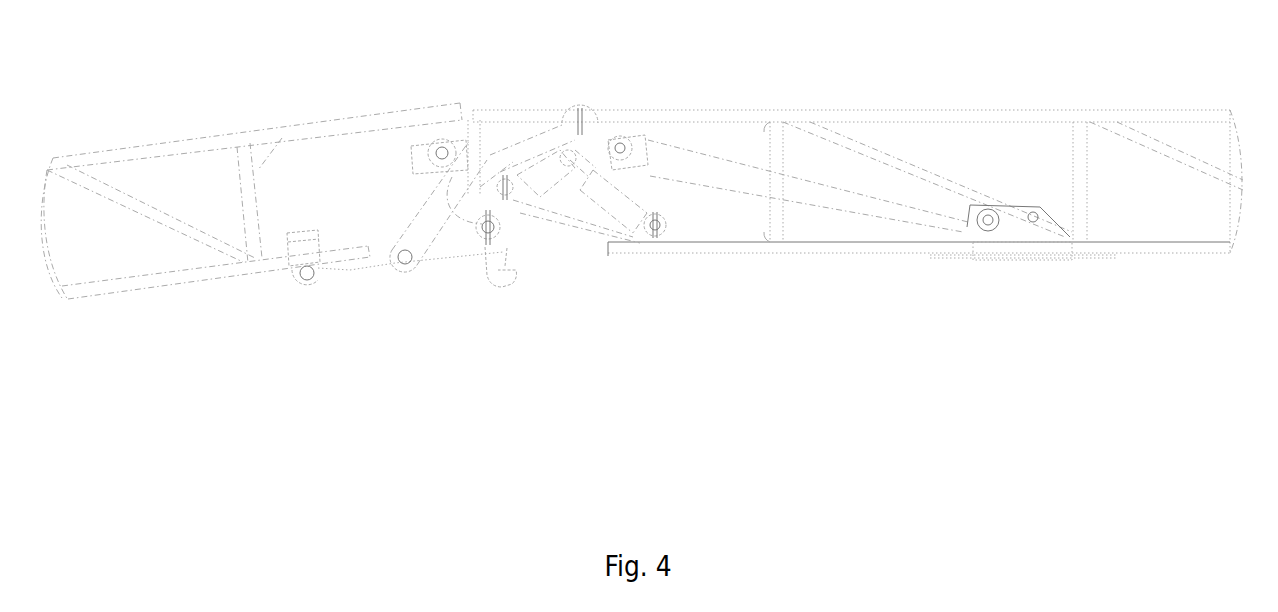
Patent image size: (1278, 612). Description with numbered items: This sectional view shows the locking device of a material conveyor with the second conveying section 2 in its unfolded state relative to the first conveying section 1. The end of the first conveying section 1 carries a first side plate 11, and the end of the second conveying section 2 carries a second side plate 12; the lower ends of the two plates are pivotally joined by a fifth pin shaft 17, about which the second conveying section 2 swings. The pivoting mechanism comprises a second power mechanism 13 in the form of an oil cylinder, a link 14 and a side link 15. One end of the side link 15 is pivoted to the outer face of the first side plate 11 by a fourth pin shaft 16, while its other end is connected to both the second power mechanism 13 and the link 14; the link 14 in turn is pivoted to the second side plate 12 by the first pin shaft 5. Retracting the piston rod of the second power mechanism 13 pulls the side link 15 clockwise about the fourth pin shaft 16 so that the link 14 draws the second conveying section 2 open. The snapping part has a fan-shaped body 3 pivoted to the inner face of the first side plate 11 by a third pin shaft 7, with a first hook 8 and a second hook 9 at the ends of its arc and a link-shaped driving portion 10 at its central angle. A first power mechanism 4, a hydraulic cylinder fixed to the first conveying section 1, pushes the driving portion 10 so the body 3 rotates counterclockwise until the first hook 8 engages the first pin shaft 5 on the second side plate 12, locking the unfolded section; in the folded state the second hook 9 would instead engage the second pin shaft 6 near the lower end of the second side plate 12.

The first conveying section 1 is at (805, 115).
The second conveying section 2 is at (200, 142).
The body 3 is at (452, 178).
The first power mechanism 4 is at (663, 233).
The first pin shaft 5 is at (436, 144).
The second pin shaft 6 is at (300, 280).
The third pin shaft 7 is at (550, 198).
The first hook 8 is at (472, 125).
The second hook 9 is at (504, 270).
The driving portion 10 is at (553, 200).
The first side plate 11 is at (640, 142).
The second side plate 12 is at (330, 190).
The second power mechanism 13 is at (873, 210).
The link 14 is at (512, 137).
The side link 15 is at (585, 130).
The fourth pin shaft 16 is at (485, 238).
The fifth pin shaft 17 is at (398, 262).